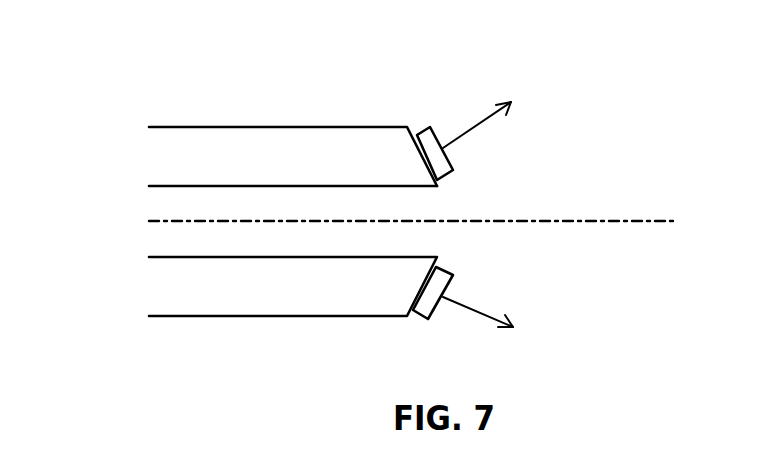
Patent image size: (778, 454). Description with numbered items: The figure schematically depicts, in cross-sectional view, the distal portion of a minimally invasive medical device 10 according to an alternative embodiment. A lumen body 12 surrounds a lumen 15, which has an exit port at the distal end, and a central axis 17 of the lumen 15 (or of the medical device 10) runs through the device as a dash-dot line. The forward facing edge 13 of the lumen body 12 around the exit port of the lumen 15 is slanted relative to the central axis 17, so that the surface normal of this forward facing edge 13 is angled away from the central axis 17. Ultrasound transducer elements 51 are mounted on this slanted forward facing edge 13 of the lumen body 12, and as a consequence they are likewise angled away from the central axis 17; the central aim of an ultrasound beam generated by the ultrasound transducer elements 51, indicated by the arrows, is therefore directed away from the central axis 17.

The medical device 10 is at (362, 207).
The lumen body 12 is at (232, 158).
The forward facing edge 13 is at (418, 156).
The lumen 15 is at (159, 203).
The central axis 17 is at (633, 220).
The ultrasound transducer elements 51 is at (432, 145).